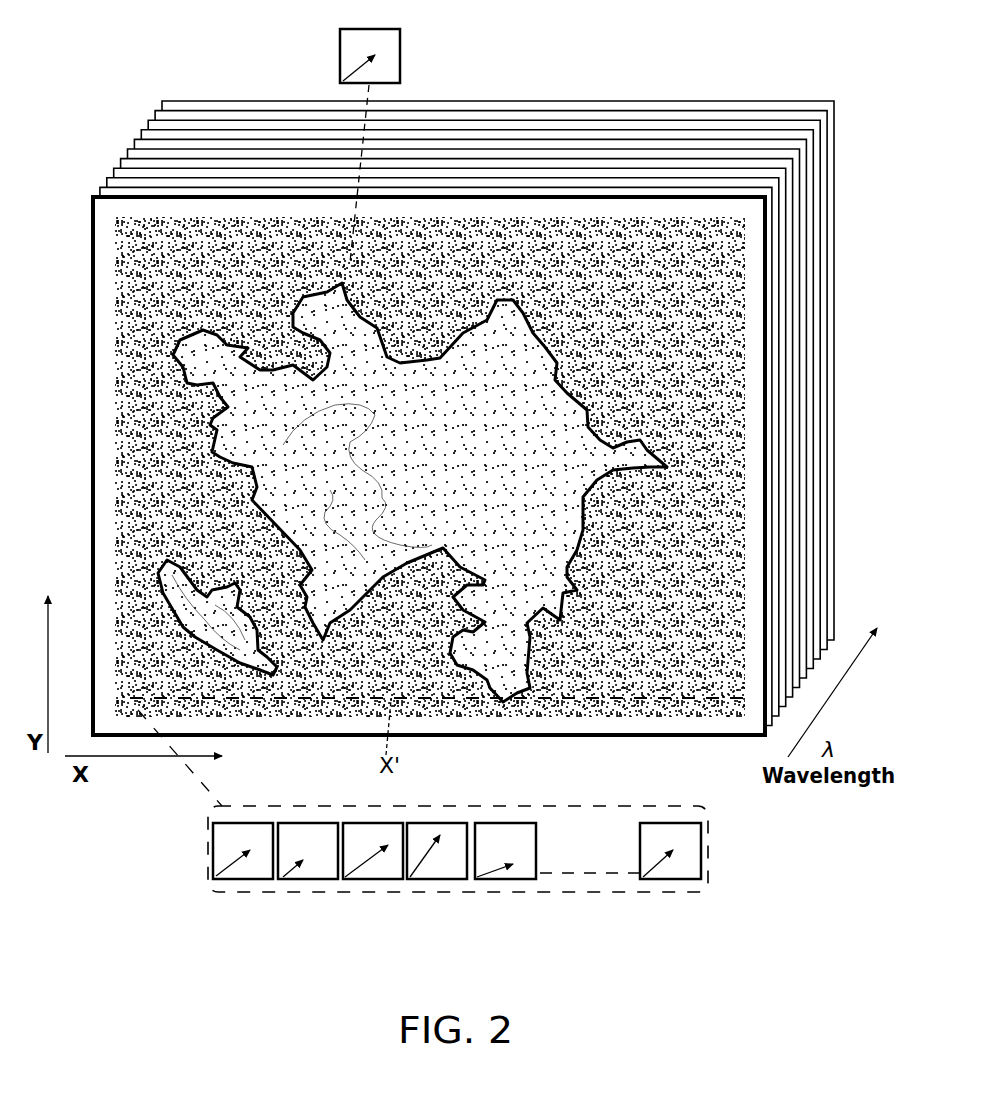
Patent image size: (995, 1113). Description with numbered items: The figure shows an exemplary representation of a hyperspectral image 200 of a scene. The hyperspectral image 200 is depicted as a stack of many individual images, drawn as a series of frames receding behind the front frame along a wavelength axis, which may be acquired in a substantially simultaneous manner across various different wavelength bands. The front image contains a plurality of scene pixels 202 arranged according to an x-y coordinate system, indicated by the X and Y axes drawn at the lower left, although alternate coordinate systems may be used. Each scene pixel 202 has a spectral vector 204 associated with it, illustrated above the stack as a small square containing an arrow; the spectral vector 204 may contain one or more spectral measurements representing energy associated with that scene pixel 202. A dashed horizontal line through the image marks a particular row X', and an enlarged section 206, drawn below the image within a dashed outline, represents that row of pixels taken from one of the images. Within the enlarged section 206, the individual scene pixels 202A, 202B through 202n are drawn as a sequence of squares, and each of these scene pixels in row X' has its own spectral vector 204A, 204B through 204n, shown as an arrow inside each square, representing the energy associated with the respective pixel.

The hyperspectral image 200 is at (127, 300).
The scene pixel 202 is at (402, 57).
The spectral vector 204 is at (345, 68).
The scene pixel 202A is at (230, 880).
The scene pixel 202B is at (327, 882).
The scene pixel 202n is at (682, 882).
The spectral vector 204A is at (228, 866).
The spectral vector 204B is at (290, 878).
The spectral vector 204n is at (652, 880).
The enlarged section 206 is at (495, 893).